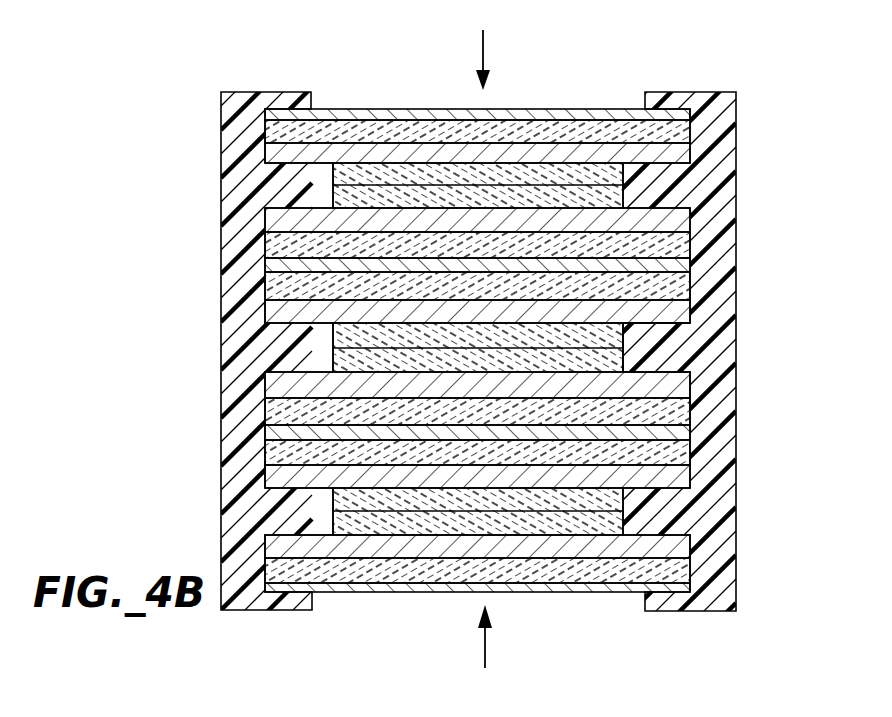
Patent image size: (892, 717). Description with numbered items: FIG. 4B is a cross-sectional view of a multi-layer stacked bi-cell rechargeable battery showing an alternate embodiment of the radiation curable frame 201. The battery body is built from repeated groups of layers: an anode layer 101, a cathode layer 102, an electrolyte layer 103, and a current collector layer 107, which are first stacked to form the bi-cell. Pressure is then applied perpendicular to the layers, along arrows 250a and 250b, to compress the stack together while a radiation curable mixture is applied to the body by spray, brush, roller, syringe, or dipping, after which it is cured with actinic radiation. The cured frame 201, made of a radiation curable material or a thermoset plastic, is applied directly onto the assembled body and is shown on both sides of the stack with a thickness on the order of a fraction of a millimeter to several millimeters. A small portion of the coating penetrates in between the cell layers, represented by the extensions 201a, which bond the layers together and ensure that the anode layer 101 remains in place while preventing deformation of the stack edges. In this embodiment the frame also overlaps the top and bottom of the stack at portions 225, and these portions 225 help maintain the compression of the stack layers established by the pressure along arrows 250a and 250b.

The anode layer 101 is at (457, 175).
The cathode layer 102 is at (387, 130).
The electrolyte layer 103 is at (513, 548).
The current collector layer 107 is at (588, 588).
The radiation curable frame 201 is at (728, 135).
The extensions 201a is at (658, 349).
The portions 225 is at (241, 80).
The arrow 250a is at (483, 52).
The arrow 250b is at (485, 640).